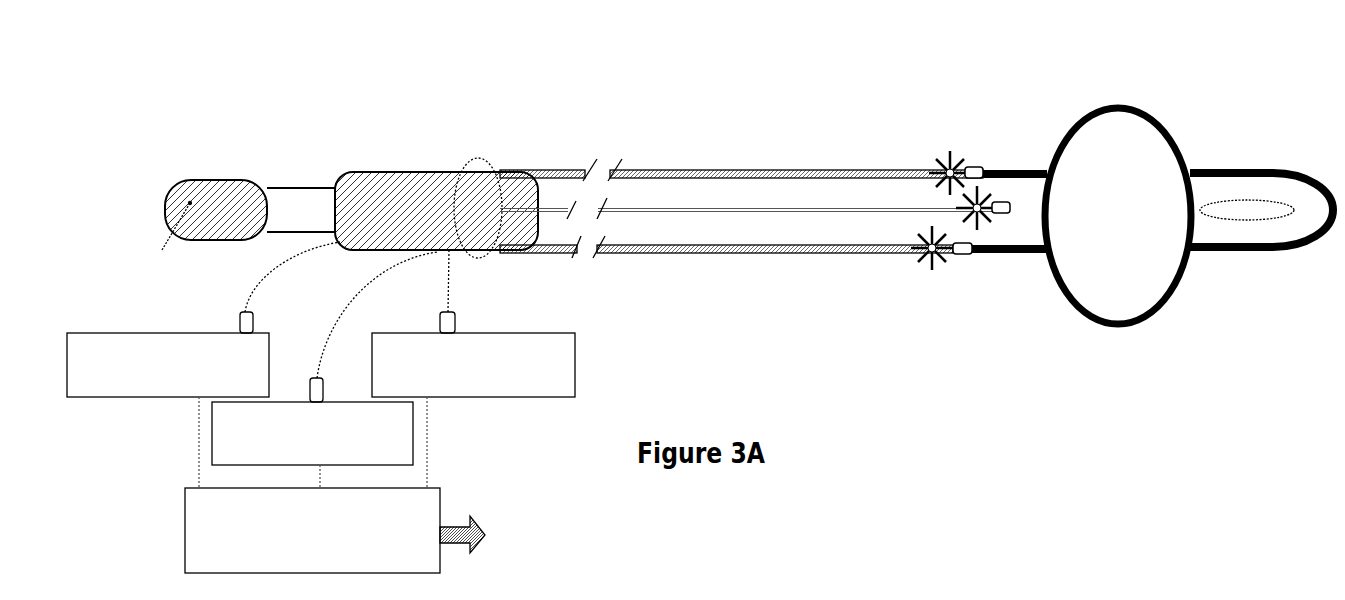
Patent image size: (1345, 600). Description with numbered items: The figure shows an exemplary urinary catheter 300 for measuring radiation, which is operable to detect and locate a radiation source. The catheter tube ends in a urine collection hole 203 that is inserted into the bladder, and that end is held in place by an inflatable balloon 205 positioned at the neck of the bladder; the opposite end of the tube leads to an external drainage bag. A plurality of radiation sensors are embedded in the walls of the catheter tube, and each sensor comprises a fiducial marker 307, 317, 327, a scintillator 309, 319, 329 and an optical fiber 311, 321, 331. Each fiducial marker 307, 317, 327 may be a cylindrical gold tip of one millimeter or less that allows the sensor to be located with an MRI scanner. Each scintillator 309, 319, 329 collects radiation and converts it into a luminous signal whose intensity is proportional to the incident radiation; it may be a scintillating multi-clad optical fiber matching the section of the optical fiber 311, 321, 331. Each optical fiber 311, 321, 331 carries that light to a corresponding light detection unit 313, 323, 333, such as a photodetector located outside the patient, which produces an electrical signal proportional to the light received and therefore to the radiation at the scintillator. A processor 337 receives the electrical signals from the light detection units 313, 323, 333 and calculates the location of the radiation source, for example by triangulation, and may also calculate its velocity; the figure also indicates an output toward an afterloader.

The urinary catheter 300 is at (517, 96).
The urine collection hole 203 is at (1247, 210).
The inflatable balloon 205 is at (1118, 216).
The fiducial marker 307 is at (980, 168).
The fiducial marker 317 is at (1010, 202).
The fiducial marker 327 is at (1000, 242).
The scintillator 309 is at (900, 176).
The scintillator 319 is at (965, 205).
The scintillator 329 is at (912, 244).
The optical fiber 311 is at (742, 242).
The optical fiber 321 is at (762, 205).
The optical fiber 331 is at (780, 176).
The light detection unit 313 is at (203, 365).
The light detection unit 323 is at (324, 370).
The light detection unit 333 is at (473, 369).
The processor 337 is at (389, 530).